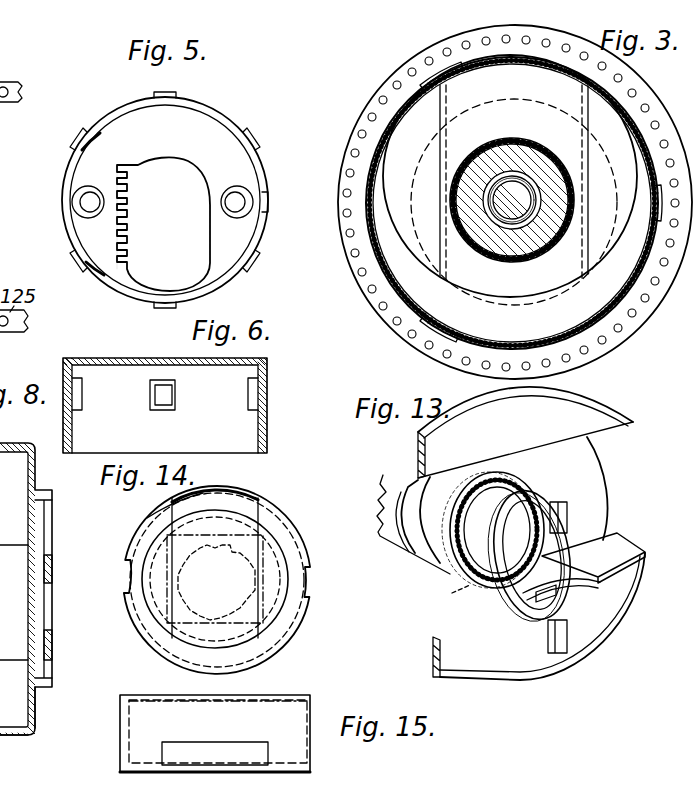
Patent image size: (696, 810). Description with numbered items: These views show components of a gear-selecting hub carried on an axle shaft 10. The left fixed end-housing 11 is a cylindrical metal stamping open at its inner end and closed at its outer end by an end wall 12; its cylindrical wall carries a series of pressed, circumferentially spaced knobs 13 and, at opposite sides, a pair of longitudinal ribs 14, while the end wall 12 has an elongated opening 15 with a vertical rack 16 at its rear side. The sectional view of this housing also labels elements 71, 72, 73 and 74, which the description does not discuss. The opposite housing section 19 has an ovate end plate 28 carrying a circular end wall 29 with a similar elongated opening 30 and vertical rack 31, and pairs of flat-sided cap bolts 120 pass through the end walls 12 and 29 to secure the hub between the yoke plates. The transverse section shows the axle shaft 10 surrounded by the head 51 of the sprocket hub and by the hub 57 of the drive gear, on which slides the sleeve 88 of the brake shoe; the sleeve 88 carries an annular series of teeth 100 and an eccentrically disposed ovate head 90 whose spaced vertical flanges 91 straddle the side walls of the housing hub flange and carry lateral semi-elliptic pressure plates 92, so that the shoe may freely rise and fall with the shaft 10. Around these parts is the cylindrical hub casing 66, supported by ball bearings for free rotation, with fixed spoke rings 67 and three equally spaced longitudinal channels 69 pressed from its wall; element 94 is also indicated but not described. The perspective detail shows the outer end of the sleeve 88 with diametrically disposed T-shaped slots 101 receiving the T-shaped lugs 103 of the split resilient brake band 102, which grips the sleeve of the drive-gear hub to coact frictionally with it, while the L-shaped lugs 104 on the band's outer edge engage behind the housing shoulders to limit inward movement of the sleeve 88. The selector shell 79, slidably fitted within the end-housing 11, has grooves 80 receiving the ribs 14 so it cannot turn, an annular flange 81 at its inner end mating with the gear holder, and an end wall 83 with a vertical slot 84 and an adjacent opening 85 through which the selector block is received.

In FIG. 3, the axle shaft 10 is at (512, 168).
In FIG. 5, the end-housing 11 is at (208, 117).
In FIG. 5, the end wall 12 is at (227, 140).
In FIG. 5, the knobs 13 is at (261, 148).
In FIG. 5, the longitudinal ribs 14 is at (268, 204).
In FIG. 5, the elongated opening 15 is at (184, 172).
In FIG. 5, the vertical rack 16 is at (130, 212).
In FIG. 6, the vertical rack 16 is at (124, 359).
In FIG. 8, the housing section 19 is at (30, 738).
In FIG. 8, the ovate end plate 28 is at (36, 720).
In FIG. 8, the circular end wall 29 is at (50, 558).
In FIG. 8, the elongated opening 30 is at (52, 565).
In FIG. 8, the vertical rack 31 is at (48, 620).
In FIG. 3, the head 51 is at (526, 250).
In FIG. 3, the hub of the drive gear 57 is at (491, 250).
In FIG. 3, the hub casing 66 is at (642, 116).
In FIG. 3, the spoke rings 67 is at (588, 354).
In FIG. 3, the longitudinal channels 69 is at (651, 193).
In FIG. 6, the housing bottom 71 is at (165, 408).
In FIG. 6, the recess 72 is at (165, 385).
In FIG. 6, the opening 73 is at (151, 394).
In FIG. 6, the side wall 74 is at (262, 428).
In FIG. 14, the selector shell 79 is at (299, 523).
In FIG. 15, the selector shell 79 is at (312, 697).
In FIG. 14, the grooves 80 is at (307, 592).
In FIG. 14, the annular flange 81 is at (245, 505).
In FIG. 14, the end wall 83 is at (155, 628).
In FIG. 14, the vertical slot 84 is at (262, 623).
In FIG. 15, the vertical slot 84 is at (228, 763).
In FIG. 14, the opening 85 is at (147, 518).
In FIG. 15, the opening 85 is at (177, 742).
In FIG. 3, the sleeve 88 is at (531, 145).
In FIG. 3, the ovate head 90 is at (510, 176).
In FIG. 13, the ovate head 90 is at (604, 471).
In FIG. 13, the vertical flanges 91 is at (620, 548).
In FIG. 3, the pressure plates 92 is at (515, 202).
In FIG. 13, the pressure plates 92 is at (643, 604).
In FIG. 3, the housing wall 94 is at (594, 298).
In FIG. 3, the teeth 100 is at (543, 251).
In FIG. 13, the T-shaped slots 101 is at (478, 470).
In FIG. 13, the brake band 102 is at (512, 590).
In FIG. 13, the T-shaped lugs 103 is at (540, 503).
In FIG. 13, the L-shaped lugs 104 is at (567, 642).
In FIG. 5, the cap bolts 120 is at (250, 188).